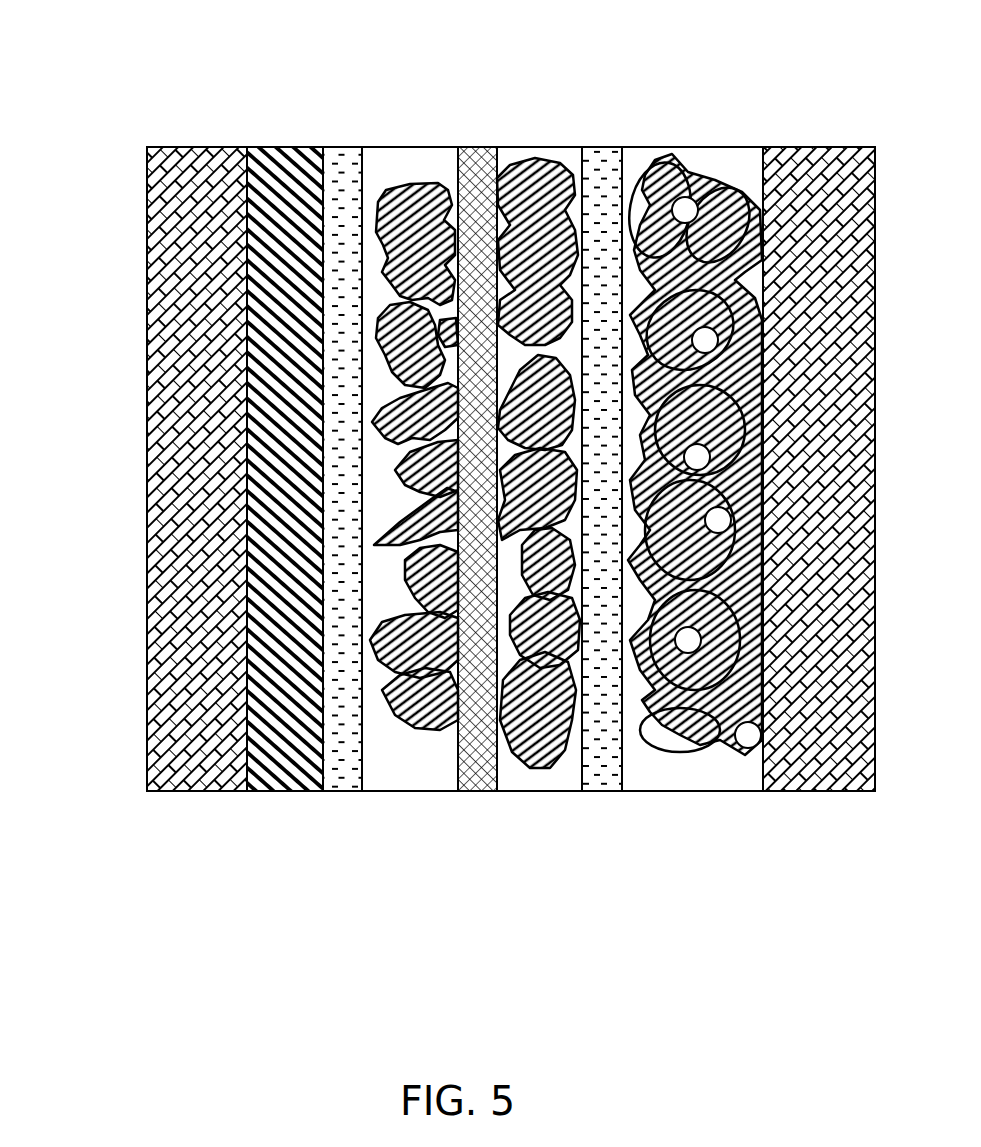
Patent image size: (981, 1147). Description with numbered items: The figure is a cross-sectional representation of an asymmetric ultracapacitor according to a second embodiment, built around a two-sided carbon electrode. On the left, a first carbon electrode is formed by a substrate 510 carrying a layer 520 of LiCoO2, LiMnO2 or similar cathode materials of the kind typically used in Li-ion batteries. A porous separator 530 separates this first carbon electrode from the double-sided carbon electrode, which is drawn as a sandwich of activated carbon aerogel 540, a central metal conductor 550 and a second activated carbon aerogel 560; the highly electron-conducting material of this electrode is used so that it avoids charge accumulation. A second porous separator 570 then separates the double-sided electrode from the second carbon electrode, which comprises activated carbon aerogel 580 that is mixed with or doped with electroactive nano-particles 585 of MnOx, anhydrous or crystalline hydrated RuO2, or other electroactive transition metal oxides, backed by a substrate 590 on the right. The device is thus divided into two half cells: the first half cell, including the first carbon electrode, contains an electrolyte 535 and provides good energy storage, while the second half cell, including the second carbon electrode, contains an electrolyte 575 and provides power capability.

The substrate 510 is at (200, 165).
The layer of LiCoO2, LiMnO2 or similar cathode materials 520 is at (288, 768).
The porous separator 530 is at (340, 165).
The electrolyte 535 is at (420, 160).
The activated carbon aerogel 540 is at (418, 743).
The metal conductor 550 is at (478, 150).
The activated carbon aerogel 560 is at (535, 757).
The porous separator 570 is at (615, 150).
The electrolyte 575 is at (537, 153).
The activated carbon aerogel 580 is at (683, 743).
The electroactive nano-particles 585 is at (748, 748).
The substrate 590 is at (837, 163).